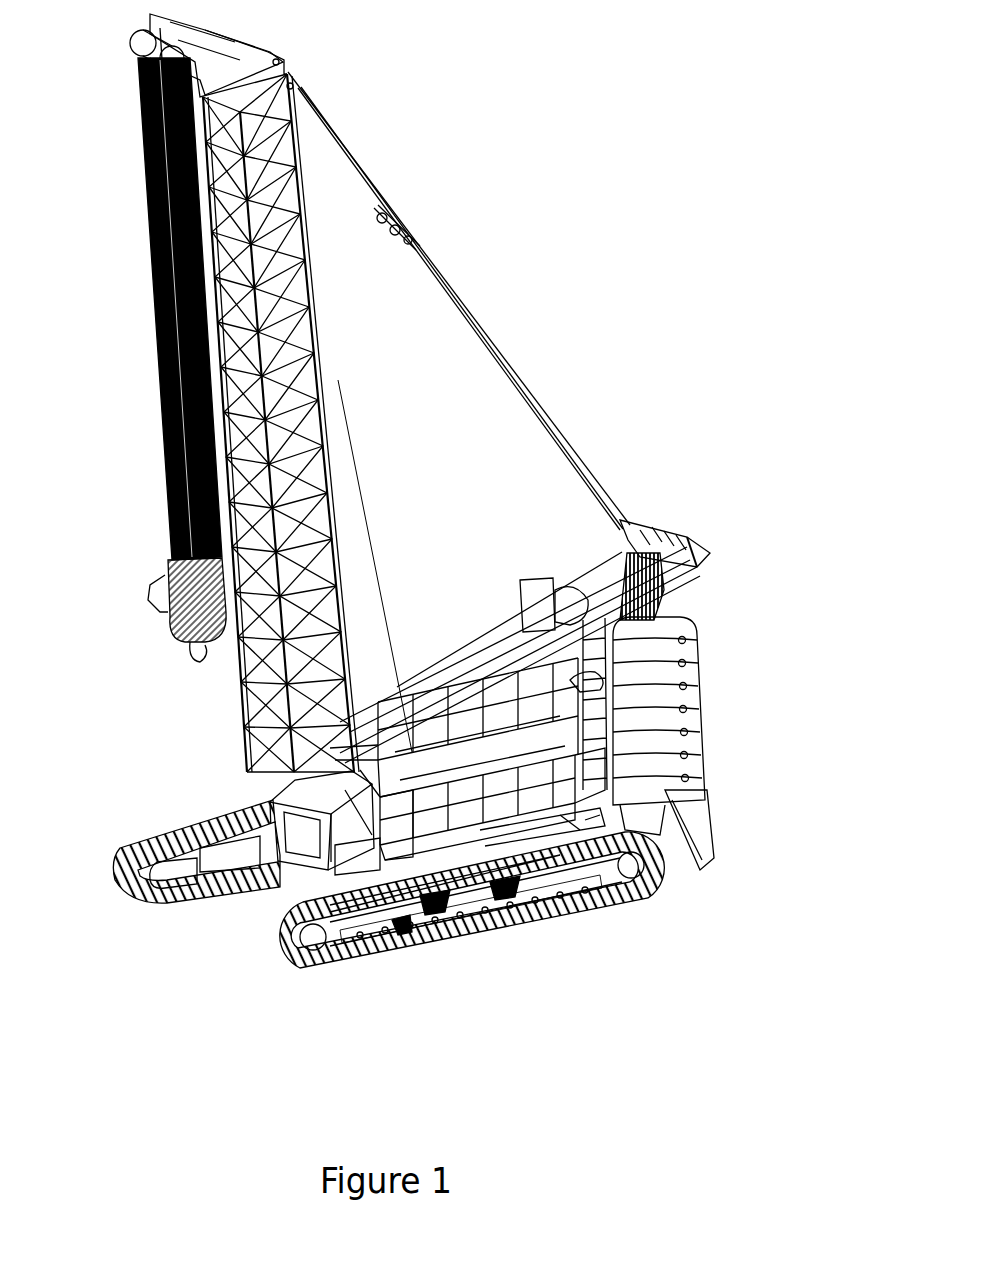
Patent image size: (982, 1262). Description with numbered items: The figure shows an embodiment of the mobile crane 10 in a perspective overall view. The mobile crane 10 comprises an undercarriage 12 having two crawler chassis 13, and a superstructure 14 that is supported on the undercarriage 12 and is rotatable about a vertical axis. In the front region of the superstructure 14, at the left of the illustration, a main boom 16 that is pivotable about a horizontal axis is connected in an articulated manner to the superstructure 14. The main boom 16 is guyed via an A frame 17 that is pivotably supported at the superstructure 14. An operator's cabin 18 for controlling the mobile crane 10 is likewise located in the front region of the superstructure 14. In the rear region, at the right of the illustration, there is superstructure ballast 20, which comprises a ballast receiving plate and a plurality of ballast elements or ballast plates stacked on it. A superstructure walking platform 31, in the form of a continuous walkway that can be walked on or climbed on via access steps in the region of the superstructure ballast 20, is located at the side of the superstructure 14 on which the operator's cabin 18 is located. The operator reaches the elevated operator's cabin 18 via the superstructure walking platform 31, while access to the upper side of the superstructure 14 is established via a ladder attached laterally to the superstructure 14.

The mobile crane 10 is at (632, 256).
The undercarriage 12 is at (207, 972).
The crawler chassis 13 is at (420, 943).
The superstructure 14 is at (518, 765).
The main boom 16 is at (340, 393).
The A frame 17 is at (674, 522).
The operator's cabin 18 is at (285, 808).
The superstructure ballast 20 is at (718, 696).
The superstructure walking platform 31 is at (584, 818).